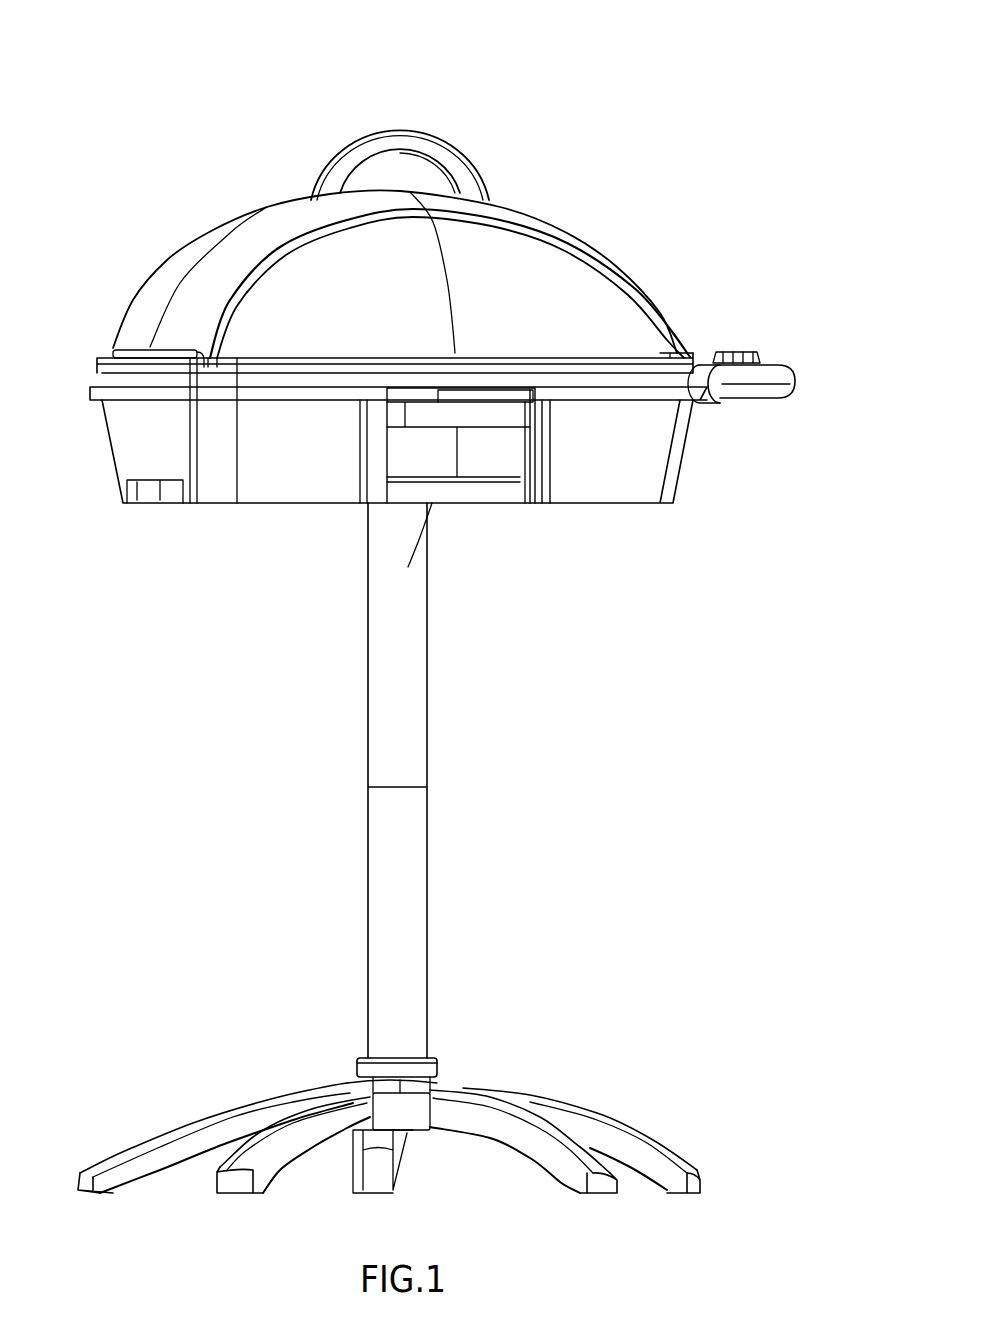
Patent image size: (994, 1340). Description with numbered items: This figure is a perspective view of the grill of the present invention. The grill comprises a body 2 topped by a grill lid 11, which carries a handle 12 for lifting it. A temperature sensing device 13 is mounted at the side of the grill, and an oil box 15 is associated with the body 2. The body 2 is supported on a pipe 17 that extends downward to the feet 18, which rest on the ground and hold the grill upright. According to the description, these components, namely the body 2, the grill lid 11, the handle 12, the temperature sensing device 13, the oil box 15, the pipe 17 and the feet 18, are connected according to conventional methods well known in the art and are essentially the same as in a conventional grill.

The body 2 is at (630, 442).
The grill lid 11 is at (330, 300).
The handle 12 is at (413, 147).
The temperature sensing device 13 is at (748, 381).
The oil box 15 is at (470, 440).
The pipe 17 is at (385, 858).
The feet 18 is at (504, 1130).